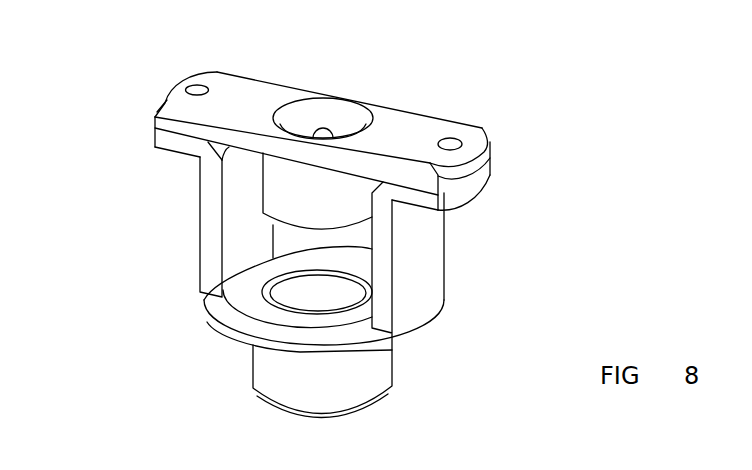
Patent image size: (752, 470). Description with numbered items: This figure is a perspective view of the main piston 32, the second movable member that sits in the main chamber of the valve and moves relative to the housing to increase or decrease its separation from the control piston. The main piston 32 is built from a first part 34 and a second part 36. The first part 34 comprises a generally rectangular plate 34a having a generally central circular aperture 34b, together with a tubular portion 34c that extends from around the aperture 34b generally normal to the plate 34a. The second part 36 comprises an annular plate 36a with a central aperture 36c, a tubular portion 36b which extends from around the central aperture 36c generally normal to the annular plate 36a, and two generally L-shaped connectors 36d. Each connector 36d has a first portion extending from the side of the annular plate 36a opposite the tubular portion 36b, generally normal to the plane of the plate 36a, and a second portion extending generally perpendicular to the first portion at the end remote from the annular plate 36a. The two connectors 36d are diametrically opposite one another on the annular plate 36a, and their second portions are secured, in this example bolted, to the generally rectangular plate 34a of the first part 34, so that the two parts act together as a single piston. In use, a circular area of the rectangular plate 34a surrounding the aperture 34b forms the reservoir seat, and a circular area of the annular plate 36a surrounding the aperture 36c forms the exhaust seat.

The main piston 32 is at (342, 219).
The first part 34 is at (336, 134).
The generally rectangular plate 34a is at (392, 132).
The central circular aperture 34b is at (324, 128).
The tubular portion 34c is at (278, 194).
The second part 36 is at (349, 288).
The annular plate 36a is at (258, 303).
The tubular portion 36b is at (372, 372).
The central aperture 36c is at (310, 300).
The L-shaped connectors 36d is at (425, 239).